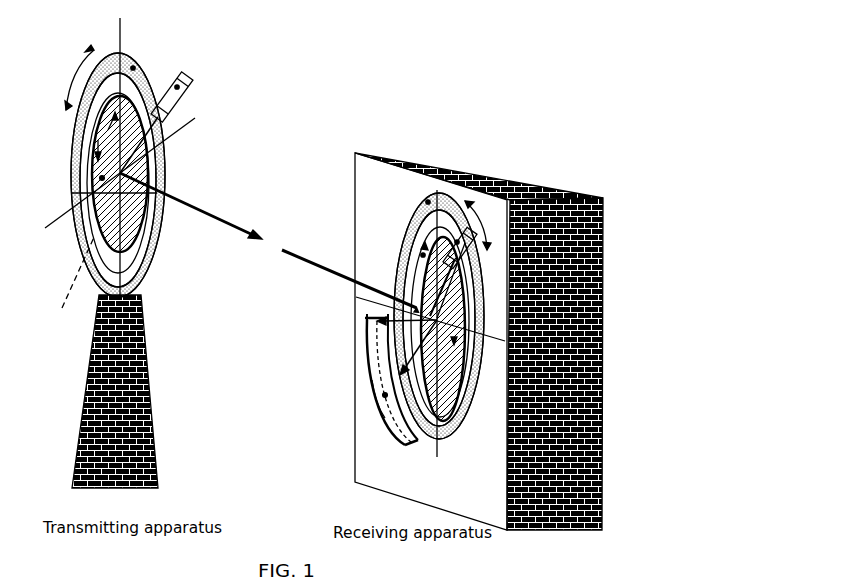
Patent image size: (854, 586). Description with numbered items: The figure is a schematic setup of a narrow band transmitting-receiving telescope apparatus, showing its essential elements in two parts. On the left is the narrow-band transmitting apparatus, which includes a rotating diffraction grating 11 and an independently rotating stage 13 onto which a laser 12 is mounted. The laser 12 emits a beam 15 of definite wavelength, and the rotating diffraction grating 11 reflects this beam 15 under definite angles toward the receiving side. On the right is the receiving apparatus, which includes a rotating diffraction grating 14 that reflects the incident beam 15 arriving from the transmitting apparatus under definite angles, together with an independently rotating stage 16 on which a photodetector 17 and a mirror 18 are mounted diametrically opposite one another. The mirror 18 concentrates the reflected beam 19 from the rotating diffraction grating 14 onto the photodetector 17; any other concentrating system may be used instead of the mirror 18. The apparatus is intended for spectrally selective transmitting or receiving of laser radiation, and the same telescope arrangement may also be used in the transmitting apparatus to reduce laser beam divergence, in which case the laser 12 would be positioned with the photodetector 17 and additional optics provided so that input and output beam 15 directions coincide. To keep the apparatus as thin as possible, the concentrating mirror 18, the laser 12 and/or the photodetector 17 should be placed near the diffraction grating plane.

The rotating diffraction grating 11 is at (99, 180).
The laser 12 is at (192, 85).
The independently rotating stage 13 is at (140, 63).
The rotating diffraction grating 14 is at (420, 254).
The beam 15 is at (274, 243).
The independently rotating stage 16 is at (426, 201).
The photodetector 17 is at (406, 218).
The mirror 18 is at (383, 396).
The reflected beam 19 is at (386, 382).